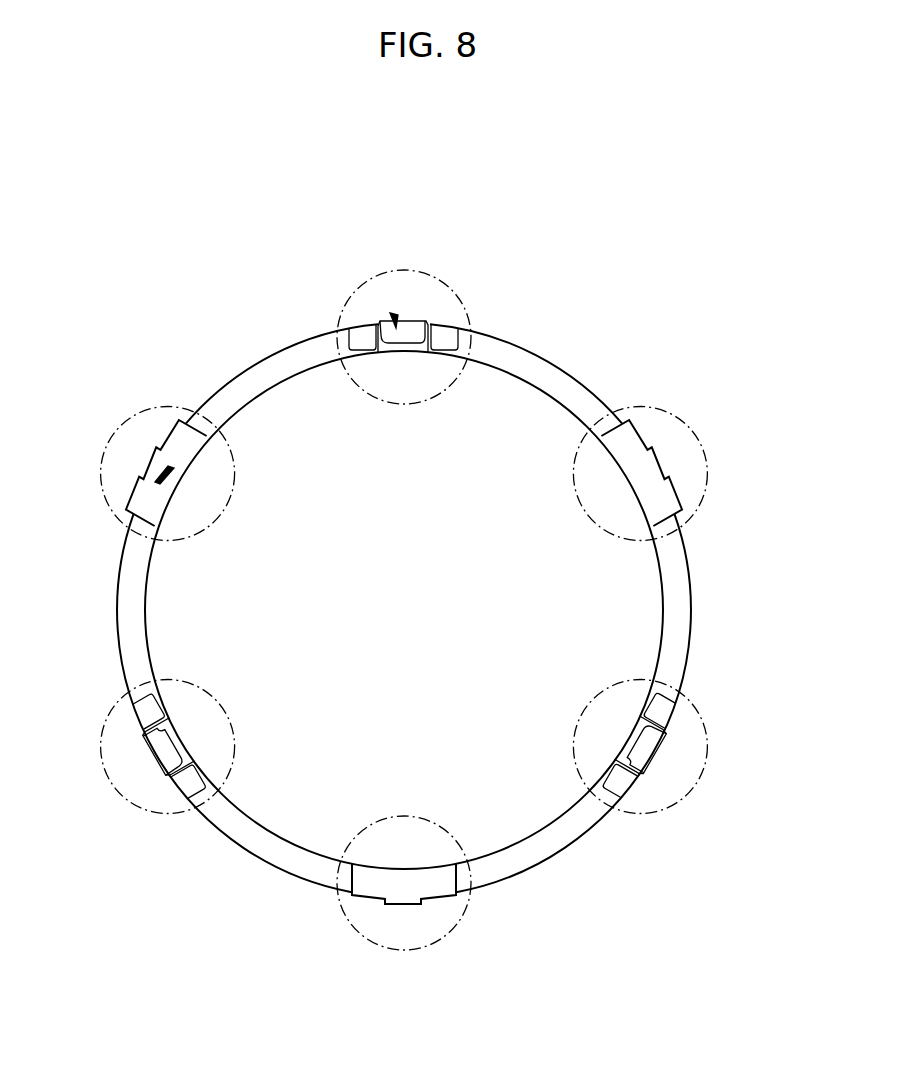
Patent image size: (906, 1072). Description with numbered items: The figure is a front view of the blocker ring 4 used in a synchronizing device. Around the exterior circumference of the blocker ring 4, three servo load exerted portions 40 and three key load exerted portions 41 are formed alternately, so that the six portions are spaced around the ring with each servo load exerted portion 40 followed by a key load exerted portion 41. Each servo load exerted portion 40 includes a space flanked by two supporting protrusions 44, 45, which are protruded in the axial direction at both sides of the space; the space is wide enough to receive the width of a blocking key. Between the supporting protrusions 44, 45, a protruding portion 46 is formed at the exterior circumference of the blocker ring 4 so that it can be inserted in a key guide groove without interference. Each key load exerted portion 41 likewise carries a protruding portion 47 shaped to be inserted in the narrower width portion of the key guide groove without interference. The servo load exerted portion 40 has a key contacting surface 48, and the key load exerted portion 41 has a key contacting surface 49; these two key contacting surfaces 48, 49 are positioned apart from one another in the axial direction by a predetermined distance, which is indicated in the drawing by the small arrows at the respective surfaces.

The blocker ring 4 is at (558, 388).
The servo load exerted portion 40 is at (403, 270).
The key load exerted portion 41 is at (698, 435).
The supporting protrusion 44 is at (362, 335).
The supporting protrusion 45 is at (447, 335).
The protruding portion 46 is at (405, 318).
The protruding portion 47 is at (148, 462).
The key contacting surface 48 is at (390, 313).
The key contacting surface 49 is at (153, 484).